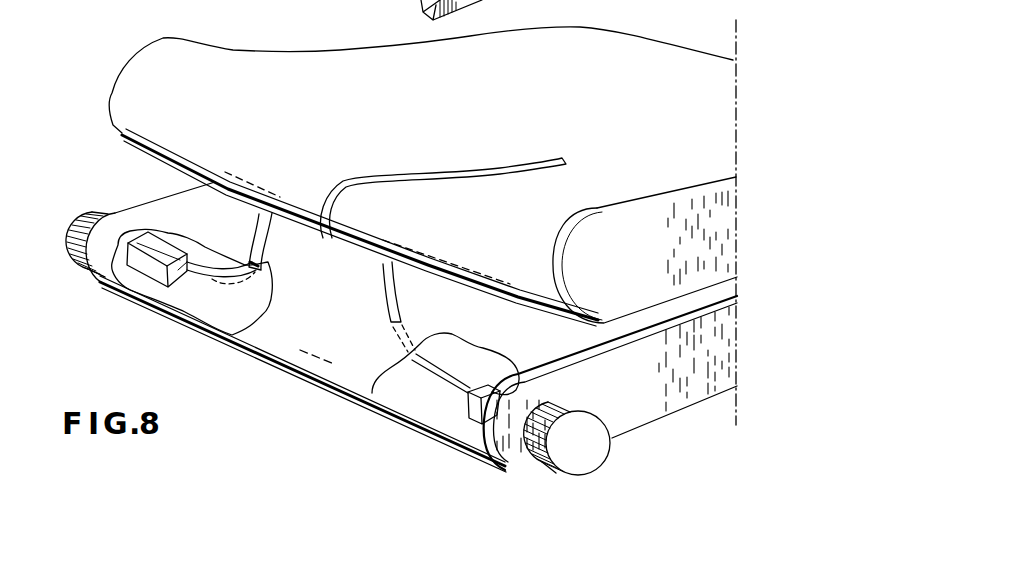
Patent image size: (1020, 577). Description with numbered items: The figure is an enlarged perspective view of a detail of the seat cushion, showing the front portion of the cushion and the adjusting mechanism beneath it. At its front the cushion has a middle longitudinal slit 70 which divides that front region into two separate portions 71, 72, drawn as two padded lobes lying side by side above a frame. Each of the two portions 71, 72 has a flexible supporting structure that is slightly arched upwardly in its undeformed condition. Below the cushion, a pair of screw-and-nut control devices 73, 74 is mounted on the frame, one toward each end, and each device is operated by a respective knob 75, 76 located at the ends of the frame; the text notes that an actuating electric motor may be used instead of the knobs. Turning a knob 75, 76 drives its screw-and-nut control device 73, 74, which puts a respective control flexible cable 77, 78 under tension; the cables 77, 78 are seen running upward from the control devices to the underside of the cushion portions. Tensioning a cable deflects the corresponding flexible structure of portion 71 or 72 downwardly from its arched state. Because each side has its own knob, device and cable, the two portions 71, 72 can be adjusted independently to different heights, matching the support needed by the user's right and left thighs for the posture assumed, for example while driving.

The middle longitudinal slit 70 is at (442, 167).
The first separate portion 71 is at (127, 97).
The second separate portion 72 is at (527, 250).
The first screw-and-nut control device 73 is at (155, 273).
The second screw-and-nut control device 74 is at (480, 410).
The first knob 75 is at (73, 260).
The second knob 76 is at (585, 455).
The first control flexible cable 77 is at (258, 302).
The second control flexible cable 78 is at (392, 323).